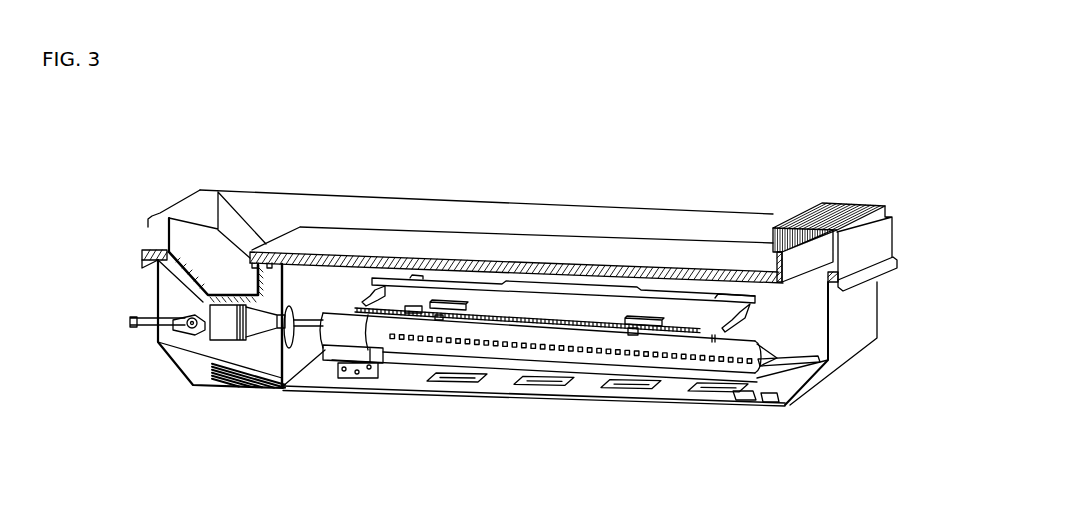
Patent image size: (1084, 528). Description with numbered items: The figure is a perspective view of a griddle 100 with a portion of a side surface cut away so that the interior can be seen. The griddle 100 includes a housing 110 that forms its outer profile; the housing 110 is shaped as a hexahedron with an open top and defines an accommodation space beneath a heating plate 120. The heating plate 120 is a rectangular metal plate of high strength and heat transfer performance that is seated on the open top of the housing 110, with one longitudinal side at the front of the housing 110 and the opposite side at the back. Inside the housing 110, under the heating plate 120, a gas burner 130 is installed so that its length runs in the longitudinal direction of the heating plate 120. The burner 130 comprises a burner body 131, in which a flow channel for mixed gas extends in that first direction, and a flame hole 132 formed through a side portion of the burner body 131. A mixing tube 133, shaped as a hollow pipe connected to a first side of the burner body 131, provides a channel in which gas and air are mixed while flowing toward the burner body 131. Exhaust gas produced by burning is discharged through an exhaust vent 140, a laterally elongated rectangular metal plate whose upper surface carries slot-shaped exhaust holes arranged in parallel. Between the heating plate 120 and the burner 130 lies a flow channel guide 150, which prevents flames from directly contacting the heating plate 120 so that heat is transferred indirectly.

The griddle 100 is at (877, 142).
The housing 110 is at (852, 320).
The heating plate 120 is at (452, 252).
The burner 130 is at (505, 359).
The burner body 131 is at (598, 360).
The flame hole 132 is at (665, 355).
The mixing tube 133 is at (327, 348).
The exhaust vent 140 is at (815, 204).
The flow channel guide 150 is at (586, 312).